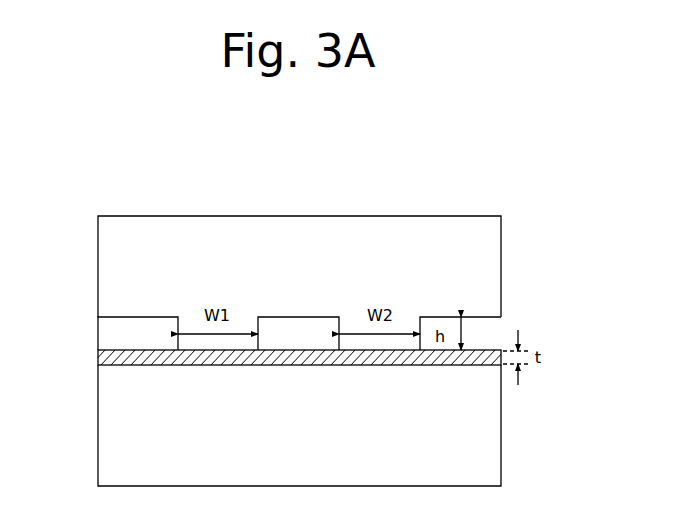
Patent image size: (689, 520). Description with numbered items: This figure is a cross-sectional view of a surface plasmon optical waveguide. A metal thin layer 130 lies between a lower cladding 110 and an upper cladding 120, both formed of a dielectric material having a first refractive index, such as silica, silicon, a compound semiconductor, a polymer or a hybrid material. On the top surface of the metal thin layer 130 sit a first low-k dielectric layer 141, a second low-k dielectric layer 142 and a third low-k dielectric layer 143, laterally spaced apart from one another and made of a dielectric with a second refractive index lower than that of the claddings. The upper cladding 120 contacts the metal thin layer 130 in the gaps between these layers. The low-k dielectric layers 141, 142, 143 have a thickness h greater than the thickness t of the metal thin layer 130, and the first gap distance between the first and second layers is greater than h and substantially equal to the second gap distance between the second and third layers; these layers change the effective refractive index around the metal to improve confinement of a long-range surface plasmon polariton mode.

The lower cladding 110 is at (491, 432).
The upper cladding 120 is at (490, 262).
The metal thin layer 130 is at (112, 358).
The first low-k dielectric layer 141 is at (110, 332).
The second low-k dielectric layer 142 is at (298, 325).
The third low-k dielectric layer 143 is at (490, 320).